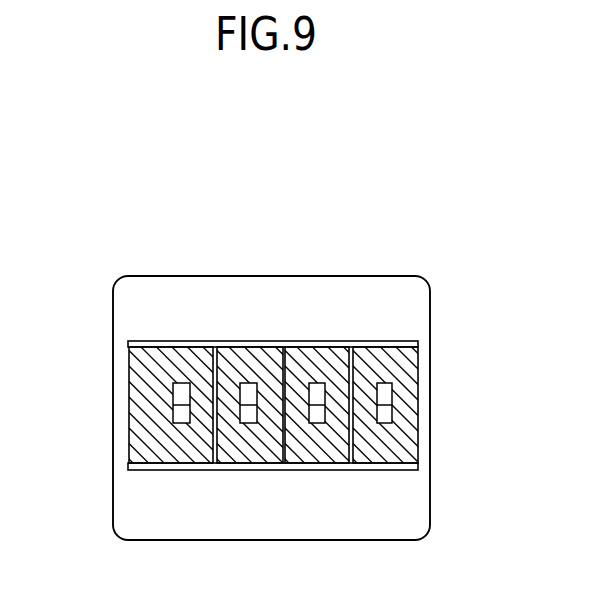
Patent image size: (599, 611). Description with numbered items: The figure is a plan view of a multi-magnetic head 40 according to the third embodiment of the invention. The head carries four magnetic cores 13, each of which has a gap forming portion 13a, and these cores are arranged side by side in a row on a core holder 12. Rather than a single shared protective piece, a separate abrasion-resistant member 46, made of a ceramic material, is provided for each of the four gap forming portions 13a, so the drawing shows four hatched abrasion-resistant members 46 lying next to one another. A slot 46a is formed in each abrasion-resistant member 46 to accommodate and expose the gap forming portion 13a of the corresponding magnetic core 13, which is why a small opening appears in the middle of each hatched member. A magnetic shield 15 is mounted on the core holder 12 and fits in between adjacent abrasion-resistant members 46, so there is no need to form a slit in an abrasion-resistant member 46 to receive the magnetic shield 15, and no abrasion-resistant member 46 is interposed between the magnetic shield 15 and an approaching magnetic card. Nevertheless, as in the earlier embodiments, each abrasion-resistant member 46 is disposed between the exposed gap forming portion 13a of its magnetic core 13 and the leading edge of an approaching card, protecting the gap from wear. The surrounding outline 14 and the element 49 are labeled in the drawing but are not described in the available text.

The multi-magnetic head 40 is at (138, 258).
The sealing resin / package body 14 is at (410, 508).
The magnetic shield 15 is at (385, 346).
The core holder 12 is at (376, 468).
The abrasion-resistant member 46 is at (138, 342).
The magnetic core 13 is at (323, 377).
The gap forming portion 13a is at (183, 422).
The slot 46a is at (172, 411).
The bump electrode 49 is at (382, 403).